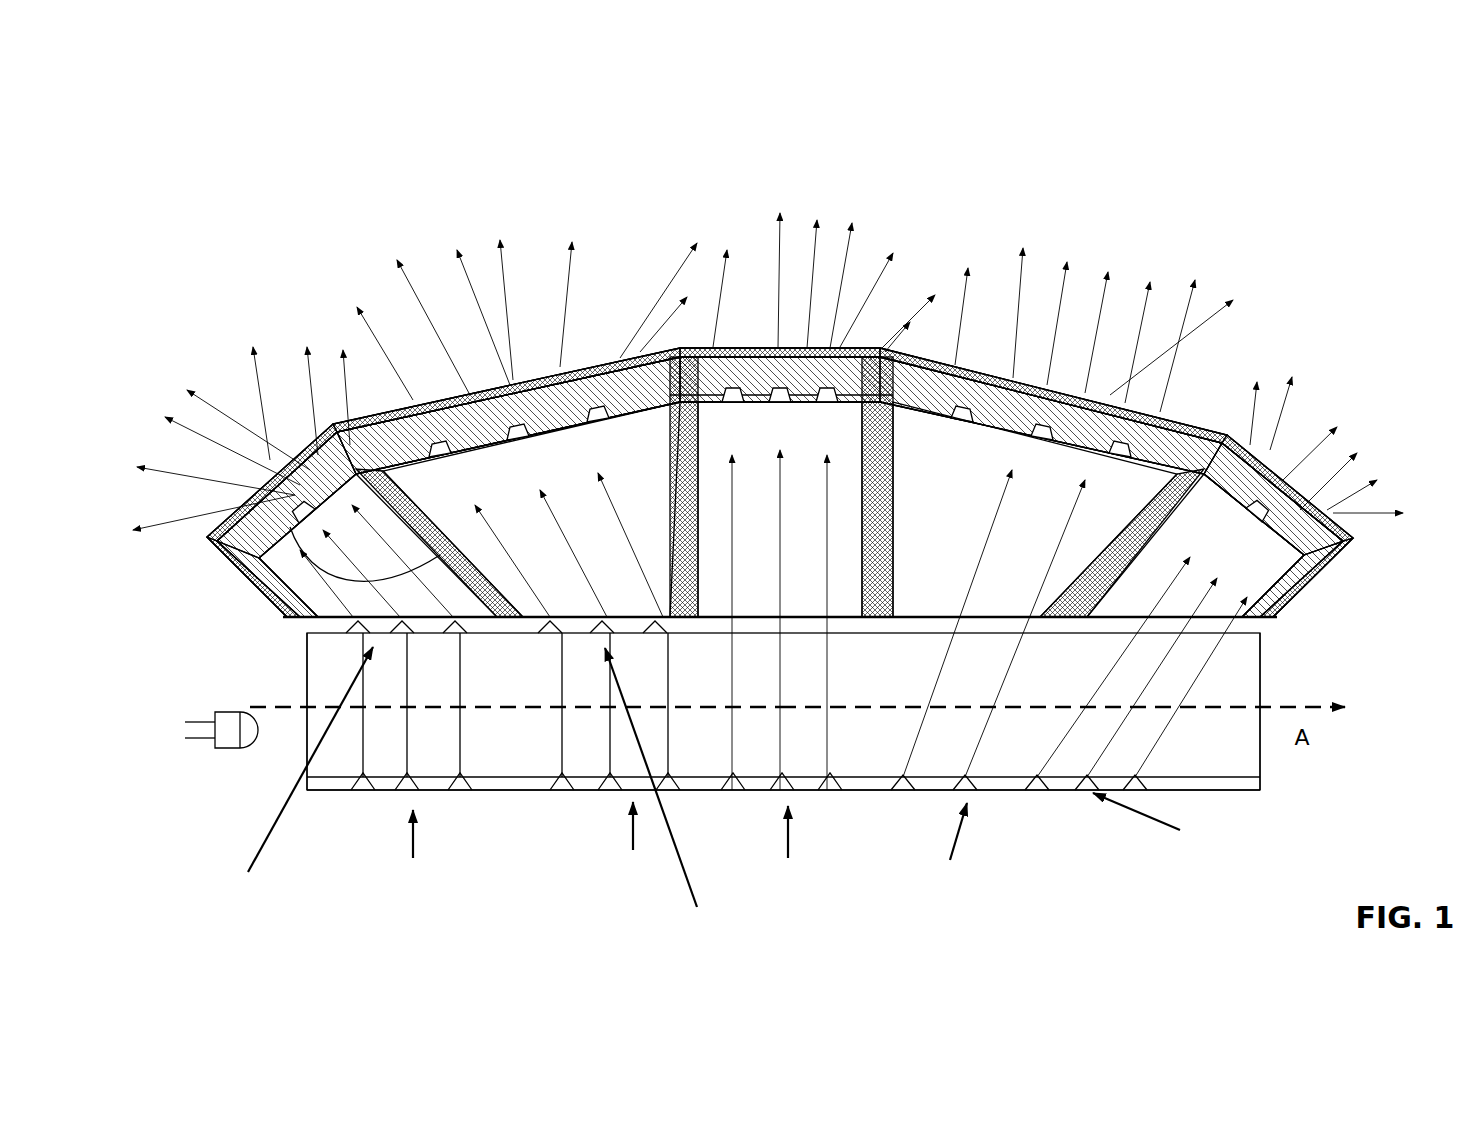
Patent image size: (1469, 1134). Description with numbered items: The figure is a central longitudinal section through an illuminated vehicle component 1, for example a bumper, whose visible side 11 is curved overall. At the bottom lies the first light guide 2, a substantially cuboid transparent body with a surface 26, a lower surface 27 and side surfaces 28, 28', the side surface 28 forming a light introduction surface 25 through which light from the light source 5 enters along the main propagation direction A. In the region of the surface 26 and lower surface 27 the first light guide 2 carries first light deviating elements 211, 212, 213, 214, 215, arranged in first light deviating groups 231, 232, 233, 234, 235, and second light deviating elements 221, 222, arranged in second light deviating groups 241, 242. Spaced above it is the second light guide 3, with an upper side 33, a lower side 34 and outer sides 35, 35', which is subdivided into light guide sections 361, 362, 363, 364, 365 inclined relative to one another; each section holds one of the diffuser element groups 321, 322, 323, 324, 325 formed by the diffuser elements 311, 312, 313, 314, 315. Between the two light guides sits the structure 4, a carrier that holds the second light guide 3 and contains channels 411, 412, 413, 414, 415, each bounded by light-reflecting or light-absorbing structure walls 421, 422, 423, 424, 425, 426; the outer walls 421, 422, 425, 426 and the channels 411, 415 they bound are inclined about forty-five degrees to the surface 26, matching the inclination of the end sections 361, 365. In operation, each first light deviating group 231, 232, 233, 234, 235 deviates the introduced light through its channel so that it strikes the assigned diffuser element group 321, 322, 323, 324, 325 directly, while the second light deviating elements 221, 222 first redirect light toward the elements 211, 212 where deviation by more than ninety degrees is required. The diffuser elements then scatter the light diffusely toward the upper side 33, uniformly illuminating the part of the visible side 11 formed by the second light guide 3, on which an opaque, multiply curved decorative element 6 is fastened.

The component 1 is at (1345, 290).
The first light guide 2 is at (300, 650).
The second light guide 3 is at (198, 506).
The structure 4 is at (240, 580).
The light source 5 is at (228, 732).
The decorative element 6 is at (1225, 445).
The visible side 11 is at (580, 385).
The light introduction surface 25 is at (307, 667).
The surface 26 is at (1245, 632).
The lower surface 27 is at (517, 793).
The side surface 28 is at (505, 747).
The side surface 28' is at (1062, 690).
The upper side 33 is at (510, 385).
The lower side 34 is at (622, 345).
The outer side 35 is at (282, 572).
The outer side 35' is at (1346, 577).
The first light deviating element 211 is at (453, 628).
The first light deviating element 212 is at (600, 628).
The first light deviating element 213 is at (767, 792).
The first light deviating element 214 is at (940, 790).
The first light deviating element 215 is at (1053, 790).
The second light deviating element 221 is at (392, 790).
The second light deviating element 222 is at (590, 793).
The first light deviating group 231 is at (276, 759).
The first light deviating group 232 is at (659, 793).
The first light deviating group 233 is at (792, 849).
The first light deviating group 234 is at (939, 853).
The first light deviating group 235 is at (1158, 824).
The second light deviating group 241 is at (417, 851).
The second light deviating group 242 is at (638, 844).
The diffuser element 311 is at (250, 475).
The diffuser element 312 is at (520, 392).
The diffuser element 313 is at (733, 387).
The diffuser element 314 is at (962, 410).
The diffuser element 315 is at (1293, 535).
The first diffuser element group 321 is at (322, 452).
The second diffuser element group 322 is at (548, 400).
The third diffuser element group 323 is at (788, 374).
The fourth diffuser element group 324 is at (1047, 407).
The fifth diffuser element group 325 is at (1283, 508).
The light guide section 361 is at (285, 457).
The light guide section 362 is at (450, 443).
The light guide section 363 is at (705, 345).
The light guide section 364 is at (945, 387).
The light guide section 365 is at (1275, 505).
The channel 411 is at (396, 616).
The channel 412 is at (506, 483).
The channel 413 is at (760, 444).
The channel 414 is at (910, 523).
The channel 415 is at (1205, 563).
The structure wall 421 is at (250, 605).
The structure wall 422 is at (313, 512).
The structure wall 423 is at (612, 397).
The structure wall 424 is at (875, 400).
The structure wall 425 is at (1170, 523).
The structure wall 426 is at (1315, 575).